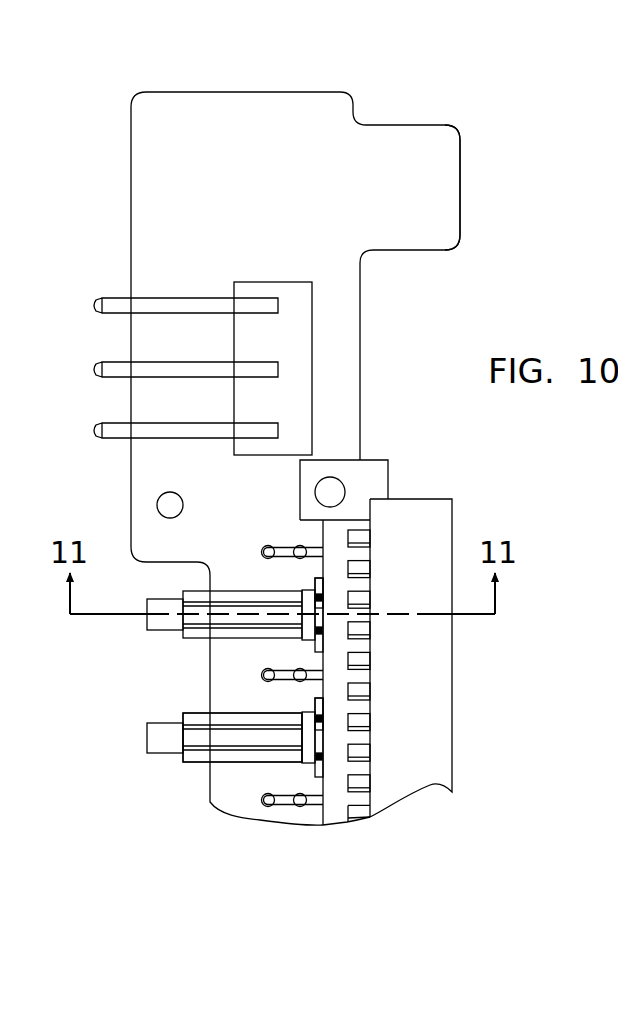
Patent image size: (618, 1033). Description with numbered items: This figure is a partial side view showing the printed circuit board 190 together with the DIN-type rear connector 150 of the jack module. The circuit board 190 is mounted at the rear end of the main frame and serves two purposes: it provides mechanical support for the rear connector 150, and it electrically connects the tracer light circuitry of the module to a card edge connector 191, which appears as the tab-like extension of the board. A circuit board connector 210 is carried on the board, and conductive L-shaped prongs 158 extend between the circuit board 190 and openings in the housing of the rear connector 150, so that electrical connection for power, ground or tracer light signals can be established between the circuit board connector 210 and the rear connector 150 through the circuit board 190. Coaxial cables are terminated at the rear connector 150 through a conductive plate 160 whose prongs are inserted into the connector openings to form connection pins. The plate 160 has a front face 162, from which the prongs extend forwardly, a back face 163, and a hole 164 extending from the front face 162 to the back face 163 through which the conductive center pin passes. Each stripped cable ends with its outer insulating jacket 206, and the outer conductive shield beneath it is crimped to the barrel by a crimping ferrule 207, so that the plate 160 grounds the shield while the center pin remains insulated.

The printed circuit board 190 is at (288, 97).
The card edge connector 191 is at (447, 223).
The circuit board connector 210 is at (150, 277).
The rear connector 150 is at (468, 495).
The L-shaped prongs 158 is at (283, 553).
The conductive plate 160 is at (320, 647).
The hole 164 is at (318, 605).
The front face 162 is at (320, 745).
The back face 163 is at (317, 730).
The outer insulating jacket 206 is at (157, 737).
The crimping ferrule 207 is at (210, 737).